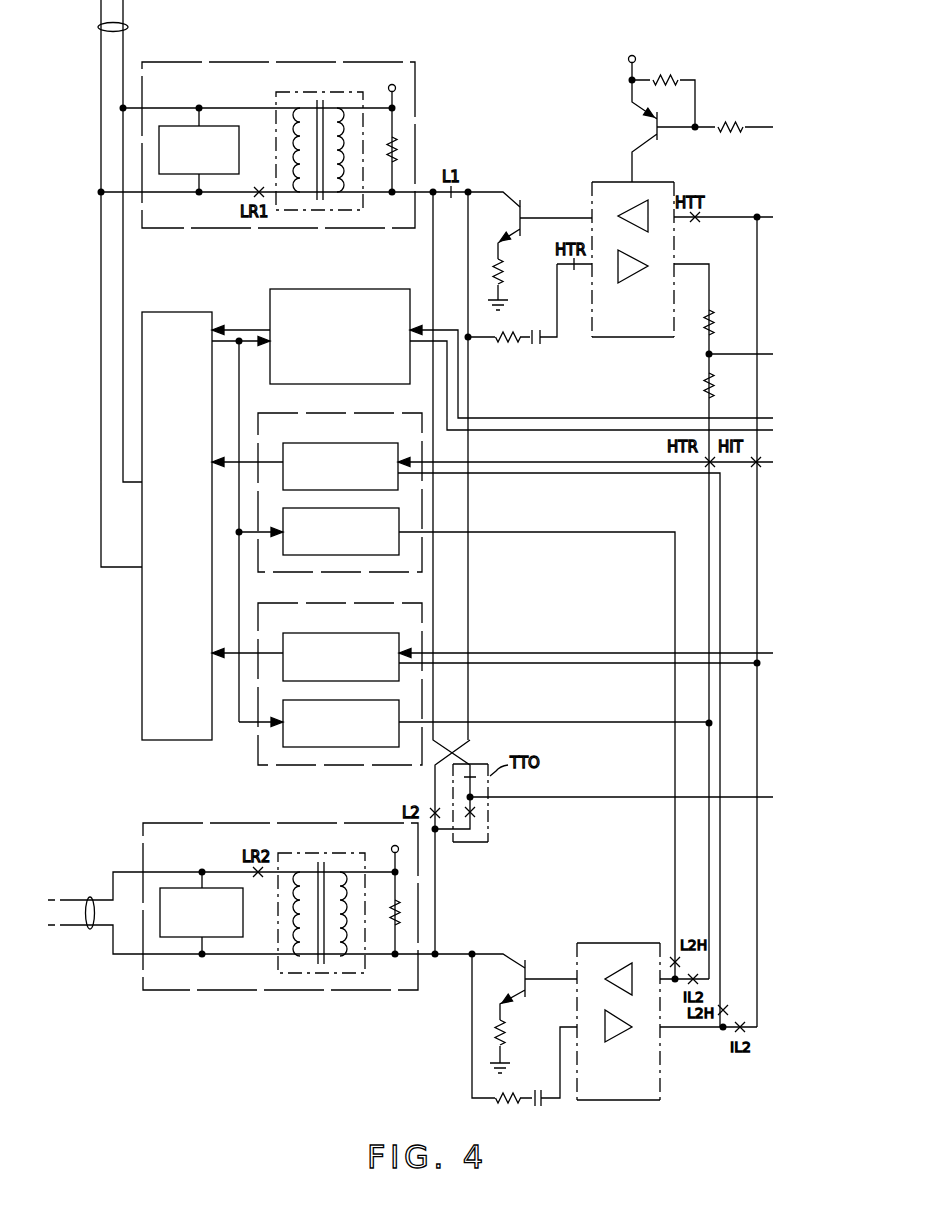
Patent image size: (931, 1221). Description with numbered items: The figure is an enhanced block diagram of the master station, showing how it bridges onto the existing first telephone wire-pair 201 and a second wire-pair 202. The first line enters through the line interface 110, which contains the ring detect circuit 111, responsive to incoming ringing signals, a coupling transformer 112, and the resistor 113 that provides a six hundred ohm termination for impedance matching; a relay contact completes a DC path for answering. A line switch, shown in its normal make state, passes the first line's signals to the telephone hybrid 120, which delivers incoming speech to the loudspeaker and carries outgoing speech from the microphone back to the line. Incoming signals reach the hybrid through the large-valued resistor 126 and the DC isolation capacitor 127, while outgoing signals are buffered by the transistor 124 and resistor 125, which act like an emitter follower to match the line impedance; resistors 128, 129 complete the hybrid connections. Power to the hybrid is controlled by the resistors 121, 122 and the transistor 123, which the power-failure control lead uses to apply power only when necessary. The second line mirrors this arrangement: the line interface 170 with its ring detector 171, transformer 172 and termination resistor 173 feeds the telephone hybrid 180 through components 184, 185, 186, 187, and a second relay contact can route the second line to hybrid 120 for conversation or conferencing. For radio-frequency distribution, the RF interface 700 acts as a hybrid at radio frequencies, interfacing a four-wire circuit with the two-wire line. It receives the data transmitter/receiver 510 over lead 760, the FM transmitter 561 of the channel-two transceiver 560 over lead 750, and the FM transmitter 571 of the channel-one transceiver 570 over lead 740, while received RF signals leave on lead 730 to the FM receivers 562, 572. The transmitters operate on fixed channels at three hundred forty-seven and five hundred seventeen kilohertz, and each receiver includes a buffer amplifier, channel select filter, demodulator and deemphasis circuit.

The wire-pair 201 is at (124, 27).
The line 1 interface 110 is at (279, 62).
The ring detect circuit 111 is at (208, 125).
The coupling transformer 112 is at (295, 92).
The resistor 113 is at (403, 151).
The telephone hybrid 120 is at (668, 183).
The resistor 121 is at (662, 76).
The resistor 122 is at (725, 119).
The transistor 123 is at (646, 129).
The transistor 124 is at (512, 198).
The resistor 125 is at (508, 251).
The resistor 126 is at (499, 331).
The DC isolation capacitor 127 is at (540, 351).
The resistor 128 is at (698, 333).
The resistor 129 is at (702, 386).
The data transmitter/receiver 510 is at (344, 289).
The RF interface 700 is at (157, 312).
The lead 760 is at (240, 326).
The lead 730 is at (234, 343).
The channel 2 FM transceiver 560 is at (355, 413).
The FM transmitter 561 is at (345, 443).
The FM receiver 562 is at (342, 555).
The lead 750 is at (271, 461).
The channel 1 FM transceiver 570 is at (343, 603).
The FM transmitter 571 is at (345, 633).
The FM receiver 572 is at (342, 747).
The lead 740 is at (272, 652).
The line interface 170 is at (284, 823).
The wire-pair 202 is at (90, 896).
The ring detector 171 is at (213, 938).
The line transformer 172 is at (292, 853).
The resistor 173 is at (408, 907).
The telephone hybrid 180 is at (604, 943).
The component 184 is at (516, 959).
The component 185 is at (511, 1028).
The component 186 is at (503, 1094).
The component 187 is at (543, 1111).